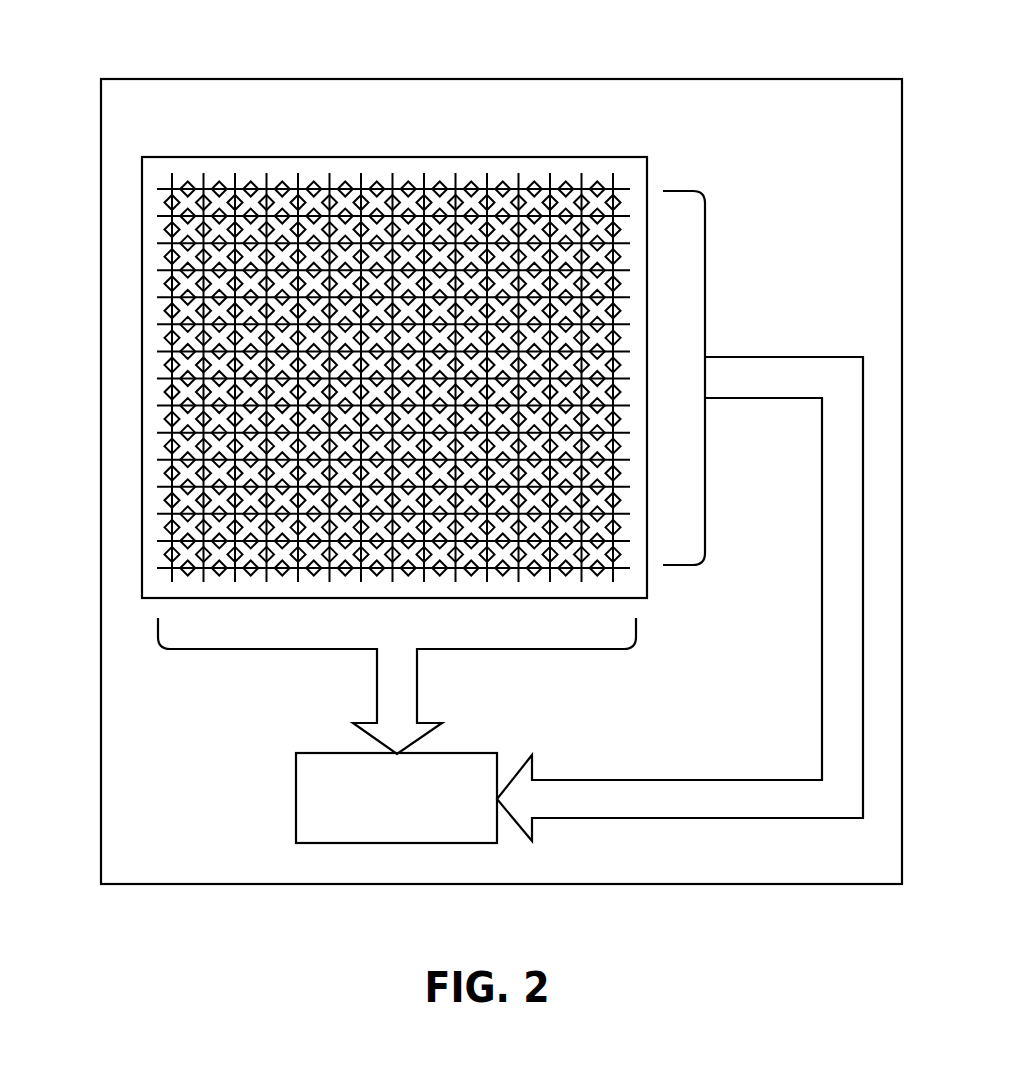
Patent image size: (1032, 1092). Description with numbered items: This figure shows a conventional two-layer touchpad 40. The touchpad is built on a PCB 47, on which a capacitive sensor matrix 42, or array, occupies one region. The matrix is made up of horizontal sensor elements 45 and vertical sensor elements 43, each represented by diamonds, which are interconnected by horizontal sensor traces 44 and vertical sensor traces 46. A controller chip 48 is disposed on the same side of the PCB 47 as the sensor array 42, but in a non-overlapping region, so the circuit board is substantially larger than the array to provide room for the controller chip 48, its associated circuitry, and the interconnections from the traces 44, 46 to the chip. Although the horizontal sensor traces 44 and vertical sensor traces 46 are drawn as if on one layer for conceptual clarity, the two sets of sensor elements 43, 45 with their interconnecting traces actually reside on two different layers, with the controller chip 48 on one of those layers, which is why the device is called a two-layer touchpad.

The two-layer touchpad 40 is at (70, 546).
The capacitive sensor matrix 42 is at (379, 348).
The vertical sensor elements 43 is at (597, 183).
The horizontal sensor traces 44 is at (705, 236).
The horizontal sensor elements 45 is at (165, 202).
The vertical sensor traces 46 is at (217, 650).
The PCB 47 is at (642, 80).
The controller chip 48 is at (296, 790).